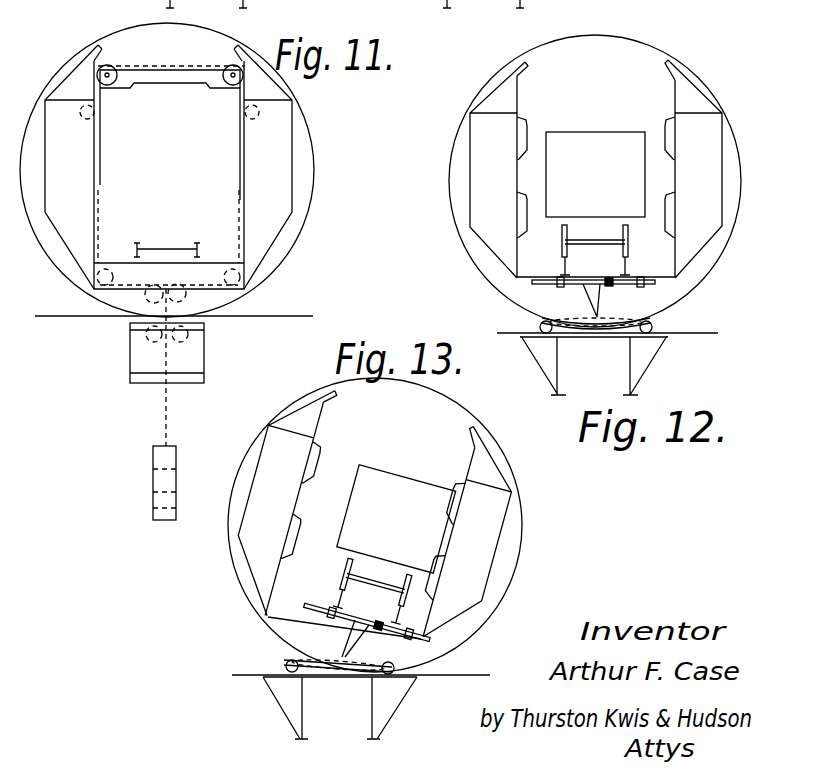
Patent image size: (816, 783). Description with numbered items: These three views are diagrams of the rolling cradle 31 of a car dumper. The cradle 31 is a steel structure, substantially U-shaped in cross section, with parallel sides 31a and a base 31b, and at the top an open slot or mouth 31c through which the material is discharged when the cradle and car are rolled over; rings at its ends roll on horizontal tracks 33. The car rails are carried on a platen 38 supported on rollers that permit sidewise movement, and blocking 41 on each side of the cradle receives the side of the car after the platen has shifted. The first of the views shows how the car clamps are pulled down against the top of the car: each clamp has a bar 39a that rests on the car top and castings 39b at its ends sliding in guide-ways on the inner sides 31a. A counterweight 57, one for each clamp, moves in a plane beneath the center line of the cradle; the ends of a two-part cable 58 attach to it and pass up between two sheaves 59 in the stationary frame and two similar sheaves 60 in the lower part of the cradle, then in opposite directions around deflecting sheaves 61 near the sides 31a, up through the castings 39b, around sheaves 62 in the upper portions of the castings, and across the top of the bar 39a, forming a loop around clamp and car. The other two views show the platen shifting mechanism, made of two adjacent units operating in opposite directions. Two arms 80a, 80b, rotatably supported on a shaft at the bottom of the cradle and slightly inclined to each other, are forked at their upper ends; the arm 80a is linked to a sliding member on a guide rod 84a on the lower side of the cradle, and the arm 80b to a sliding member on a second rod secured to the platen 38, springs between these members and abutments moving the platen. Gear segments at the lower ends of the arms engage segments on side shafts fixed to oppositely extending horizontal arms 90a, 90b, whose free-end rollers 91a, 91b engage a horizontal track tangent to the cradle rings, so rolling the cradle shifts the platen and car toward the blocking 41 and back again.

In FIG. 11, the cradle 31 is at (310, 197).
In FIG. 12, the cradle 31 is at (450, 180).
In FIG. 13, the cradle 31 is at (240, 578).
In FIG. 11, the parallel sides 31a is at (242, 200).
In FIG. 12, the parallel sides 31a is at (517, 180).
In FIG. 13, the parallel sides 31a is at (370, 529).
In FIG. 11, the base 31b is at (116, 261).
In FIG. 12, the base 31b is at (537, 277).
In FIG. 13, the base 31b is at (308, 590).
In FIG. 12, the open slot or mouth 31c is at (666, 56).
In FIG. 13, the open slot or mouth 31c is at (466, 425).
In FIG. 11, the horizontal tracks 33 is at (310, 317).
In FIG. 12, the horizontal tracks 33 is at (512, 330).
In FIG. 13, the horizontal tracks 33 is at (228, 673).
In FIG. 11, the platen 38 is at (164, 250).
In FIG. 12, the platen 38 is at (595, 250).
In FIG. 13, the platen 38 is at (367, 607).
In FIG. 11, the bar 39a is at (170, 82).
In FIG. 11, the castings 39b is at (100, 118).
In FIG. 12, the blocking 41 is at (667, 128).
In FIG. 13, the blocking 41 is at (318, 458).
In FIG. 11, the counterweights 57 is at (152, 462).
In FIG. 11, the two-part cable 58 is at (162, 395).
In FIG. 11, the sheaves 59 is at (148, 337).
In FIG. 11, the sheaves 60 is at (145, 298).
In FIG. 11, the deflecting sheaves 61 is at (92, 288).
In FIG. 11, the sheaves 62 is at (111, 66).
In FIG. 12, the arm 80a is at (582, 300).
In FIG. 13, the arm 80a is at (333, 640).
In FIG. 12, the arm 80b is at (605, 297).
In FIG. 13, the arm 80b is at (393, 630).
In FIG. 12, the guide rod 84a is at (653, 286).
In FIG. 13, the guide rod 84a is at (422, 645).
In FIG. 12, the arm 90a is at (580, 332).
In FIG. 13, the arm 90a is at (308, 662).
In FIG. 12, the arm 90b is at (630, 335).
In FIG. 13, the arm 90b is at (372, 668).
In FIG. 12, the roller 91a is at (552, 328).
In FIG. 13, the roller 91a is at (318, 650).
In FIG. 12, the roller 91b is at (650, 335).
In FIG. 13, the roller 91b is at (392, 708).